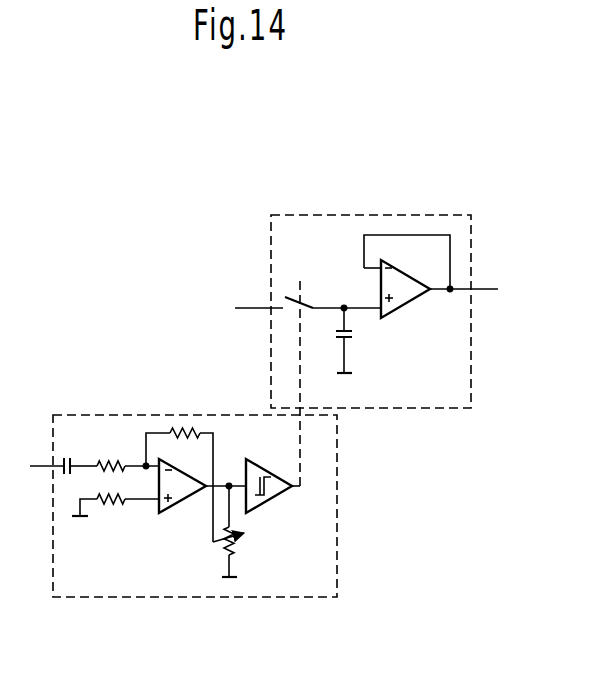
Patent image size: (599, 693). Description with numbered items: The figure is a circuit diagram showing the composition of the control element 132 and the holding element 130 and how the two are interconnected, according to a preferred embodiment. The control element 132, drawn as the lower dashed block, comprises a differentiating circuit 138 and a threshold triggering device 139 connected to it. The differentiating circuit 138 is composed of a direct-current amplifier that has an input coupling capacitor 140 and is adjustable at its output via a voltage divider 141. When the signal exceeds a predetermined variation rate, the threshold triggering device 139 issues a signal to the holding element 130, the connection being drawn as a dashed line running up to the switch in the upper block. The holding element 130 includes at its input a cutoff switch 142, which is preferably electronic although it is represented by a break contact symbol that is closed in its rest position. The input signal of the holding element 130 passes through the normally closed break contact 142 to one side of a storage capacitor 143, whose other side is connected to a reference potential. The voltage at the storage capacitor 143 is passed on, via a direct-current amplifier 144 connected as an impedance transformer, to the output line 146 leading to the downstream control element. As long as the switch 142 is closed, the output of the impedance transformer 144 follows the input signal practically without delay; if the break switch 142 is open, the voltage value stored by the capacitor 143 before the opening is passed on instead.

The holding element 130 is at (476, 362).
The control element 132 is at (341, 531).
The differentiating circuit 138 is at (174, 555).
The threshold triggering device 139 is at (275, 500).
The input coupling capacitor 140 is at (70, 455).
The voltage divider 141 is at (243, 549).
The cutoff switch 142 is at (308, 368).
The storage capacitor 143 is at (354, 329).
The direct-current amplifier 144 is at (403, 297).
The output line 146 is at (487, 288).